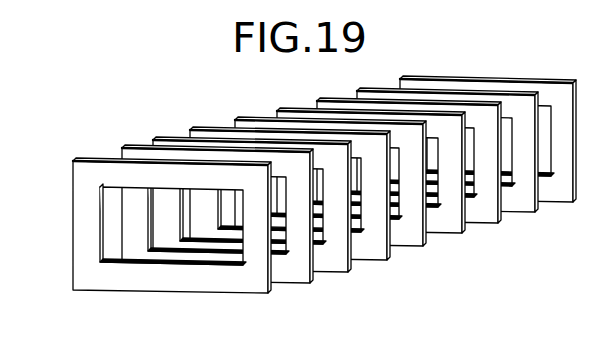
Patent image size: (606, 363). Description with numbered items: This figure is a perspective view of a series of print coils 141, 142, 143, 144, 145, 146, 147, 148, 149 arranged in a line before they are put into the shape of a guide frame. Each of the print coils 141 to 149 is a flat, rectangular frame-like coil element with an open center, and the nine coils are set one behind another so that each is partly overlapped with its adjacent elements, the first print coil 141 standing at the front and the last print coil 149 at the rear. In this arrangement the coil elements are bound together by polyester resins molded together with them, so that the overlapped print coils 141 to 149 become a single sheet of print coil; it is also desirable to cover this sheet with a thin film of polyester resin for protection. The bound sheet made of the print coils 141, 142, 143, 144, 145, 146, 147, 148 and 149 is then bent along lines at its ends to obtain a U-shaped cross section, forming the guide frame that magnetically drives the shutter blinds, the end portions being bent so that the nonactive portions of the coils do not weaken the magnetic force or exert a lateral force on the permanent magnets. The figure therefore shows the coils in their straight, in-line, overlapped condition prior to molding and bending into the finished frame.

The print coil 141 is at (242, 284).
The print coil 142 is at (295, 277).
The print coil 143 is at (335, 262).
The print coil 144 is at (370, 252).
The print coil 145 is at (408, 240).
The print coil 146 is at (445, 230).
The print coil 147 is at (483, 220).
The print coil 148 is at (523, 207).
The print coil 149 is at (562, 193).